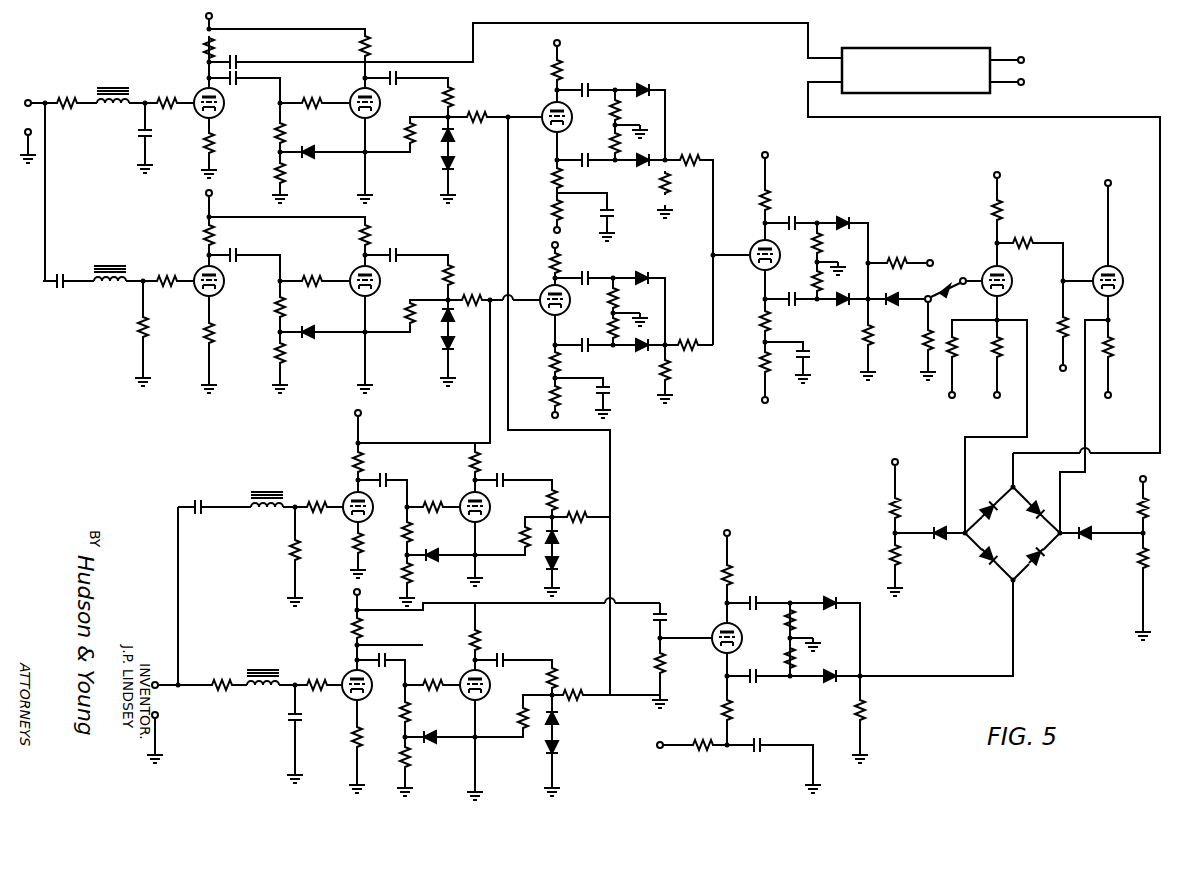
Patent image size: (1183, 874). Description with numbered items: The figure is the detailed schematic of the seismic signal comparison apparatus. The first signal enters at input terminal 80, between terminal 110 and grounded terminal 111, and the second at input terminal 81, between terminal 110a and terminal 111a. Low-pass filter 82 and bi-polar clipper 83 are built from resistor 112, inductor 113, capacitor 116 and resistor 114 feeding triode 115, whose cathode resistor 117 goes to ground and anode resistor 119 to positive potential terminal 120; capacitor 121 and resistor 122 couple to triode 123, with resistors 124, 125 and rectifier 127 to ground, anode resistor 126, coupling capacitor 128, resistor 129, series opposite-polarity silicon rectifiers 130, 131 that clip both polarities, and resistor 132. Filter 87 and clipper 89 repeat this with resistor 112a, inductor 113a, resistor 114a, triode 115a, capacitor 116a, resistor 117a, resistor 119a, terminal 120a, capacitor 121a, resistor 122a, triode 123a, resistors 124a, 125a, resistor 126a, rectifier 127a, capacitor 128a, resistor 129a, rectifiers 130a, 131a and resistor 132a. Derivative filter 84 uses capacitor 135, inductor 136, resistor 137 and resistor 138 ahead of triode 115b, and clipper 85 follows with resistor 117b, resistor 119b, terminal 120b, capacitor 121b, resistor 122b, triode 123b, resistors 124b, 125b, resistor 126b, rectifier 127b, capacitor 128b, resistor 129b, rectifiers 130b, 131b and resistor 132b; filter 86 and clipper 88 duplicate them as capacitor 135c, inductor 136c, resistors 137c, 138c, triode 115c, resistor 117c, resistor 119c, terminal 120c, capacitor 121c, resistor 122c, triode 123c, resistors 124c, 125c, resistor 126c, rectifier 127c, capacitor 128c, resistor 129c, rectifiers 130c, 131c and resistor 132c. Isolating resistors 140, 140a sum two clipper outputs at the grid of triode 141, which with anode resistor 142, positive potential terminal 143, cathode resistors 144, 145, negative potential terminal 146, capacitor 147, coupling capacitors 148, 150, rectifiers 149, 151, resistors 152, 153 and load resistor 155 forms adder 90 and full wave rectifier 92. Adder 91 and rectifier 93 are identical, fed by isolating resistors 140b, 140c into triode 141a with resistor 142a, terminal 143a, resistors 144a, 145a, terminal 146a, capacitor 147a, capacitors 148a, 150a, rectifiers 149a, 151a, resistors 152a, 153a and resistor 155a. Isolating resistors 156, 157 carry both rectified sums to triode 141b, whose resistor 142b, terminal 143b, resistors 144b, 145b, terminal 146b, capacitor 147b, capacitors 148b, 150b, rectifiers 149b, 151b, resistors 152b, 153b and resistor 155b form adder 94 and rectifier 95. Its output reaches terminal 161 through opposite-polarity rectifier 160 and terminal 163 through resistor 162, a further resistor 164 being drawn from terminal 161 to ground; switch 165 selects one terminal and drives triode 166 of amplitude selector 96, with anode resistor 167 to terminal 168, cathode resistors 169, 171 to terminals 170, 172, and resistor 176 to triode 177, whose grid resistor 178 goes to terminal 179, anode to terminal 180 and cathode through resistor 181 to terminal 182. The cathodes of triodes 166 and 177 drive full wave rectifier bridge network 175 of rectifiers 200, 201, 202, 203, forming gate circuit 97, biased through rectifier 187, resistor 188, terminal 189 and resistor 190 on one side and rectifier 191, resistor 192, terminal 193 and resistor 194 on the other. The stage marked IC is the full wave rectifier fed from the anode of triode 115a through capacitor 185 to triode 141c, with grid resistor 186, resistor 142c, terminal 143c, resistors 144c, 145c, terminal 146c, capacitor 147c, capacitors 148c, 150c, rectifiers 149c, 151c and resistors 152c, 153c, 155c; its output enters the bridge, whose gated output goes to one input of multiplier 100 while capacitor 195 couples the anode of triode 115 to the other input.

The input terminal 80 is at (21, 112).
The input terminal 81 is at (170, 708).
The filter 82 is at (151, 87).
The bi-polar clipper 83 is at (466, 158).
The filter 84 is at (137, 265).
The bi-polar clipper 85 is at (460, 340).
The filter 86 is at (272, 472).
The filter 87 is at (270, 655).
The clipper 88 is at (570, 570).
The clipper 89 is at (568, 760).
The adder 90 is at (530, 93).
The adder 91 is at (492, 290).
The full wave rectifier 92 is at (660, 75).
The full wave rectifier 93 is at (665, 270).
The adder 94 is at (734, 225).
The full wave rectifier 95 is at (876, 193).
The amplitude selector 96 is at (962, 255).
The gate circuit 97 is at (1032, 586).
The multiplier 100 is at (945, 48).
The terminal 110 is at (31, 99).
The terminal 111 is at (31, 142).
The resistor 112 is at (67, 112).
The inductor 113 is at (108, 107).
The resistor 114 is at (167, 112).
The triode 115 is at (198, 92).
The capacitor 116 is at (140, 135).
The resistor 117 is at (205, 143).
The resistor 119 is at (203, 46).
The positive potential terminal 120 is at (205, 17).
The capacitor 121 is at (234, 86).
The resistor 122 is at (312, 95).
The triode 123 is at (354, 115).
The resistor 124 is at (274, 133).
The resistor 125 is at (274, 173).
The resistor 126 is at (370, 43).
The rectifier 127 is at (311, 160).
The capacitor 128 is at (395, 85).
The resistor 129 is at (452, 93).
The rectifier 130 is at (443, 142).
The rectifier 131 is at (442, 168).
The resistor 132 is at (406, 128).
The capacitor 135 is at (56, 288).
The inductor 136 is at (105, 288).
The resistor 137 is at (169, 262).
The resistor 138 is at (137, 330).
The isolating resistor 140 is at (478, 111).
The triode 141 is at (547, 130).
The resistor 142 is at (562, 68).
The positive potential terminal 143 is at (561, 43).
The resistor 144 is at (551, 180).
The resistor 145 is at (550, 210).
The negative potential terminal 146 is at (553, 228).
The capacitor 147 is at (612, 215).
The capacitor 148 is at (588, 87).
The rectifier 149 is at (641, 82).
The capacitor 150 is at (584, 170).
The rectifier 151 is at (637, 165).
The resistor 152 is at (621, 110).
The resistor 153 is at (609, 143).
The resistor 155 is at (659, 183).
The isolating resistor 156 is at (692, 152).
The isolating resistor 157 is at (690, 352).
The rectifier 160 is at (888, 306).
The terminal 161 is at (925, 304).
The resistor 162 is at (896, 257).
The terminal 163 is at (927, 266).
The resistor 164 is at (920, 343).
The switch 165 is at (962, 285).
The triode 166 is at (1009, 273).
The resistor 167 is at (1004, 213).
The positive potential terminal 168 is at (1000, 175).
The resistor 169 is at (993, 350).
The negative potential terminal 170 is at (995, 398).
The resistor 171 is at (958, 342).
The positive potential terminal 172 is at (950, 397).
The full wave rectifier bridge network 175 is at (1022, 540).
The resistor 176 is at (1028, 240).
The triode 177 is at (1121, 275).
The resistor 178 is at (1058, 320).
The negative potential terminal 179 is at (1061, 370).
The positive potential terminal 180 is at (1111, 182).
The resistor 181 is at (1114, 342).
The negative potential terminal 182 is at (1112, 393).
The capacitor 185 is at (665, 614).
The resistor 186 is at (653, 660).
The rectifier 187 is at (940, 526).
The resistor 188 is at (886, 508).
The negative potential terminal 189 is at (892, 462).
The resistor 190 is at (886, 555).
The rectifier 191 is at (1085, 526).
The resistor 192 is at (1136, 500).
The positive potential terminal 193 is at (1140, 479).
The resistor 194 is at (1136, 562).
The capacitor 195 is at (235, 55).
The rectifier 200 is at (982, 504).
The rectifier 201 is at (982, 560).
The rectifier 202 is at (1042, 566).
The rectifier 203 is at (1037, 503).
The detector stage IC is at (806, 580).
The terminal 110a is at (158, 688).
The terminal 111a is at (158, 730).
The resistor 112a is at (222, 673).
The inductor 113a is at (265, 694).
The resistor 114a is at (323, 667).
The triode 115a is at (350, 698).
The capacitor 116a is at (288, 720).
The resistor 117a is at (352, 742).
The resistor 119a is at (351, 630).
The positive potential terminal 120a is at (354, 594).
The capacitor 121a is at (381, 651).
The resistor 122a is at (442, 672).
The triode 123a is at (466, 672).
The resistor 124a is at (412, 714).
The resistor 125a is at (412, 762).
The resistor 126a is at (480, 635).
The rectifier 127a is at (432, 744).
The capacitor 128a is at (504, 655).
The resistor 129a is at (558, 672).
The rectifier 130a is at (559, 718).
The rectifier 131a is at (559, 747).
The resistor 132a is at (520, 708).
The isolating resistor 140a is at (573, 692).
The triode 141a is at (546, 315).
The resistor 142a is at (549, 268).
The positive potential terminal 143a is at (552, 247).
The resistor 144a is at (550, 364).
The resistor 145a is at (550, 398).
The negative potential terminal 146a is at (551, 415).
The capacitor 147a is at (612, 390).
The capacitor 148a is at (588, 275).
The rectifier 149a is at (642, 268).
The capacitor 150a is at (583, 352).
The rectifier 151a is at (641, 356).
The resistor 152a is at (620, 295).
The resistor 153a is at (608, 328).
The resistor 155a is at (672, 378).
The triode 115b is at (199, 295).
The resistor 117b is at (205, 336).
The resistor 119b is at (203, 232).
The positive potential terminal 120b is at (205, 195).
The capacitor 121b is at (234, 250).
The resistor 122b is at (312, 275).
The triode 123b is at (355, 295).
The resistor 124b is at (274, 307).
The resistor 125b is at (274, 353).
The resistor 126b is at (370, 230).
The rectifier 127b is at (311, 342).
The capacitor 128b is at (395, 250).
The resistor 129b is at (442, 278).
The rectifier 130b is at (443, 322).
The rectifier 131b is at (443, 348).
The resistor 132b is at (405, 312).
The isolating resistor 140b is at (472, 290).
The triode 141b is at (757, 275).
The resistor 142b is at (770, 190).
The positive potential terminal 143b is at (767, 155).
The resistor 144b is at (758, 325).
The resistor 145b is at (757, 368).
The negative potential terminal 146b is at (764, 402).
The capacitor 147b is at (810, 360).
The capacitor 148b is at (794, 215).
The rectifier 149b is at (850, 220).
The capacitor 150b is at (800, 305).
The rectifier 151b is at (848, 310).
The resistor 152b is at (826, 245).
The resistor 153b is at (808, 279).
The resistor 155b is at (858, 338).
The triode 115c is at (348, 517).
The resistor 117c is at (352, 546).
The resistor 119c is at (352, 460).
The positive potential terminal 120c is at (361, 416).
The capacitor 121c is at (385, 472).
The resistor 122c is at (440, 492).
The triode 123c is at (466, 494).
The resistor 124c is at (414, 532).
The resistor 125c is at (413, 578).
The resistor 126c is at (478, 462).
The rectifier 127c is at (431, 562).
The capacitor 128c is at (505, 478).
The resistor 129c is at (546, 500).
The rectifier 130c is at (546, 542).
The rectifier 131c is at (545, 566).
The resistor 132c is at (520, 537).
The capacitor 135c is at (196, 499).
The inductor 136c is at (268, 512).
The resistor 137c is at (317, 497).
The resistor 138c is at (288, 553).
The isolating resistor 140c is at (577, 525).
The triode 141c is at (718, 650).
The resistor 142c is at (720, 572).
The positive potential terminal 143c is at (724, 533).
The resistor 144c is at (720, 708).
The resistor 145c is at (702, 738).
The negative potential terminal 146c is at (662, 750).
The capacitor 147c is at (757, 753).
The capacitor 148c is at (754, 596).
The rectifier 149c is at (832, 596).
The capacitor 150c is at (756, 684).
The rectifier 151c is at (830, 686).
The resistor 152c is at (784, 622).
The resistor 153c is at (784, 658).
The resistor 155c is at (866, 706).